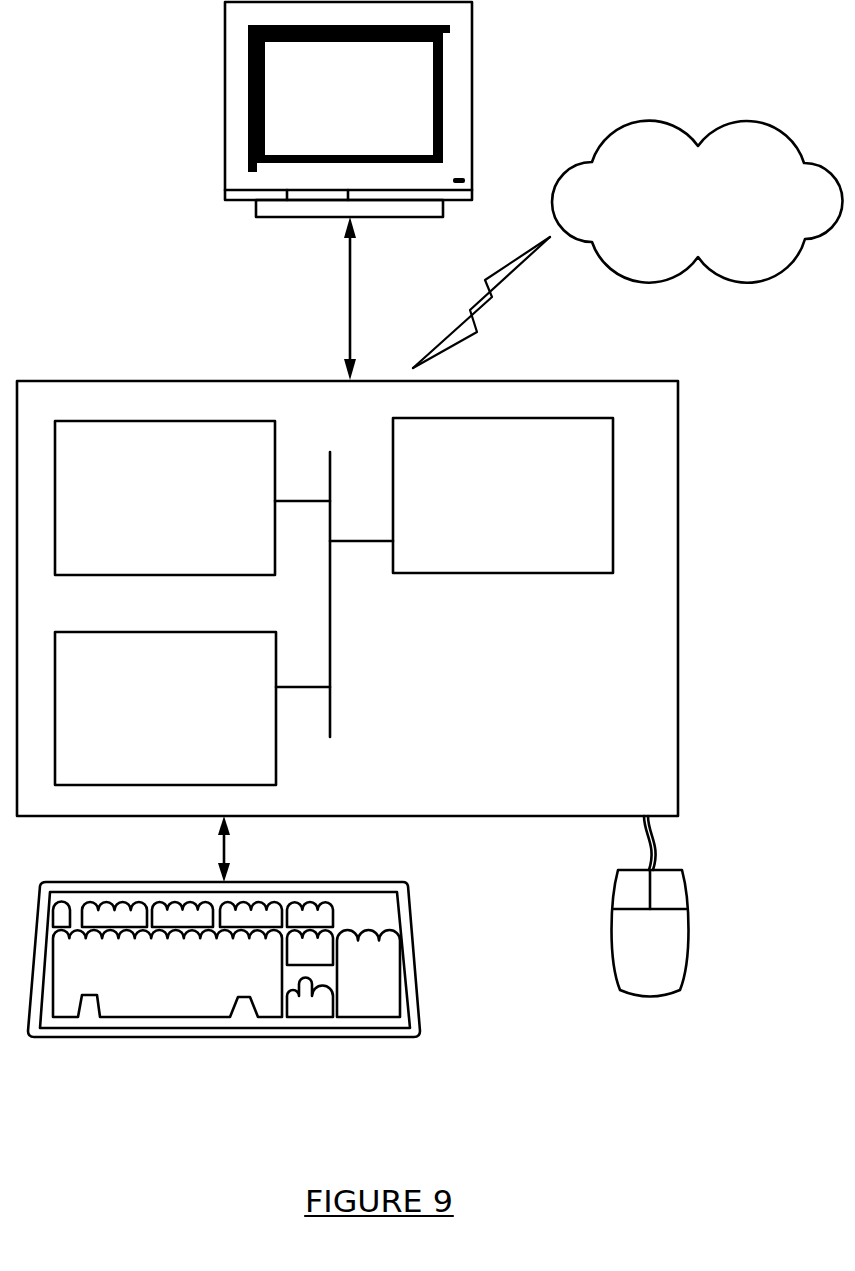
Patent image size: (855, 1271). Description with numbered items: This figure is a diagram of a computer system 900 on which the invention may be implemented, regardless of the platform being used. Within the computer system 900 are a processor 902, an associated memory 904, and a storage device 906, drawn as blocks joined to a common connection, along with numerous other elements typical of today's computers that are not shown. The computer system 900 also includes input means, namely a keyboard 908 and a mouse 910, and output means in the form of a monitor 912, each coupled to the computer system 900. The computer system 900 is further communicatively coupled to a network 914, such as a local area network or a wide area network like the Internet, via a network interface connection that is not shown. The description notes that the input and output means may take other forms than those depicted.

The computer system 900 is at (702, 645).
The processor 902 is at (523, 514).
The memory 904 is at (186, 511).
The storage device 906 is at (184, 722).
The keyboard 908 is at (179, 999).
The mouse 910 is at (671, 954).
The monitor 912 is at (330, 119).
The network 914 is at (731, 212).